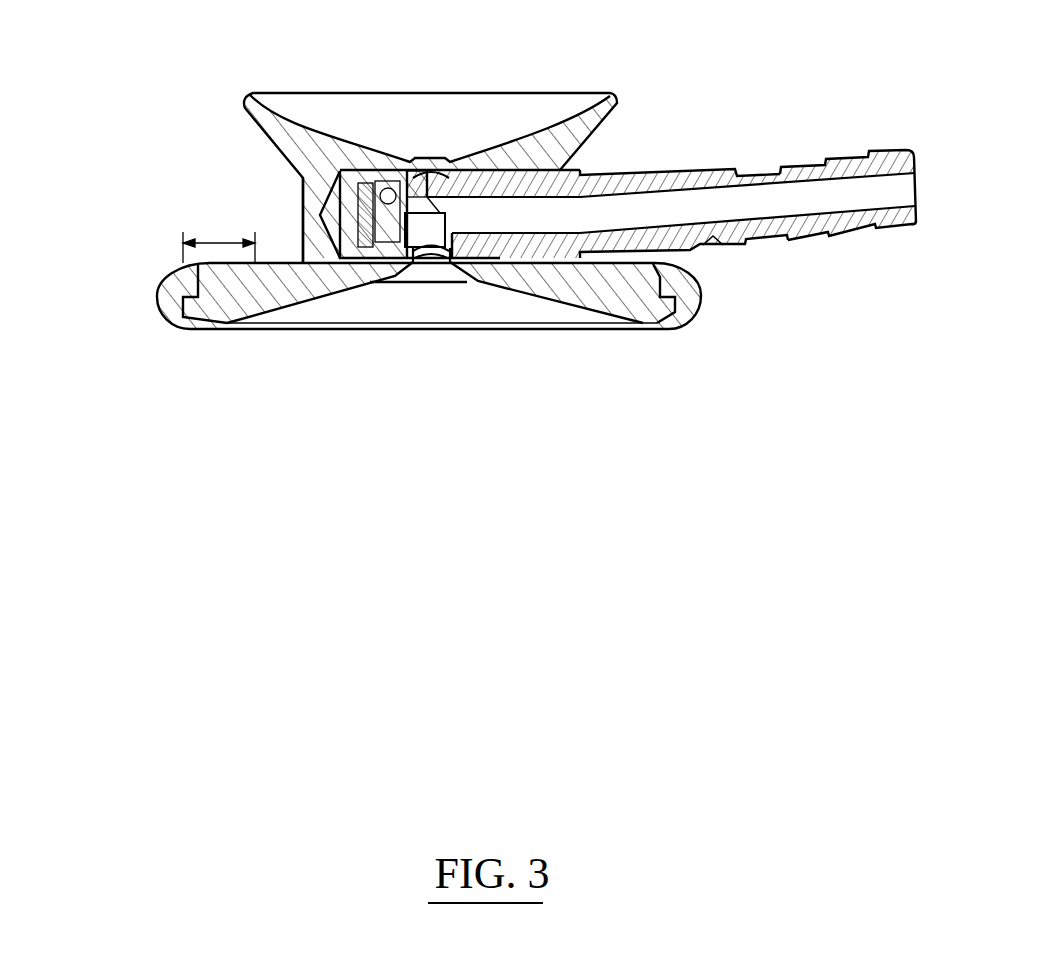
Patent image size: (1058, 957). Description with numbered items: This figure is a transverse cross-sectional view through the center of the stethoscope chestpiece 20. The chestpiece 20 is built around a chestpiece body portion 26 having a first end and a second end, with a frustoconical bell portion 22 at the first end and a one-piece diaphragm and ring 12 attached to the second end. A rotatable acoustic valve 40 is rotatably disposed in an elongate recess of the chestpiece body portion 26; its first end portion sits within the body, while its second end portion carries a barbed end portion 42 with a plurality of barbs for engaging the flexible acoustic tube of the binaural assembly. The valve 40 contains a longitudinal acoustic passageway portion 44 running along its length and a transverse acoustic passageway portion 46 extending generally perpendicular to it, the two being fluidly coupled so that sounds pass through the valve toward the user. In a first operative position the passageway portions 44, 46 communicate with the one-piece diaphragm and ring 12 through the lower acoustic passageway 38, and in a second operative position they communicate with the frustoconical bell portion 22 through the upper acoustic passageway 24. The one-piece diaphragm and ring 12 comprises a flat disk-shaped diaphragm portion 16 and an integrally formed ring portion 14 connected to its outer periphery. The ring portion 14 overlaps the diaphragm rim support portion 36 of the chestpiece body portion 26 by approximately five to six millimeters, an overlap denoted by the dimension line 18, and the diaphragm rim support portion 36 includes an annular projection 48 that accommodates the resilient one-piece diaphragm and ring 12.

The one-piece diaphragm and ring 12 is at (682, 295).
The ring portion 14 is at (168, 303).
The diaphragm portion 16 is at (413, 330).
The dimension line 18 is at (222, 240).
The stethoscope chestpiece 20 is at (227, 339).
The frustoconical bell portion 22 is at (292, 130).
The upper acoustic passageway 24 is at (432, 172).
The chestpiece body portion 26 is at (303, 192).
The diaphragm rim support portion 36 is at (587, 295).
The lower acoustic passageway 38 is at (428, 263).
The rotatable acoustic valve 40 is at (675, 168).
The barbed end portion 42 is at (843, 160).
The longitudinal acoustic passageway portion 44 is at (620, 217).
The transverse acoustic passageway portion 46 is at (407, 213).
The annular projection 48 is at (677, 308).